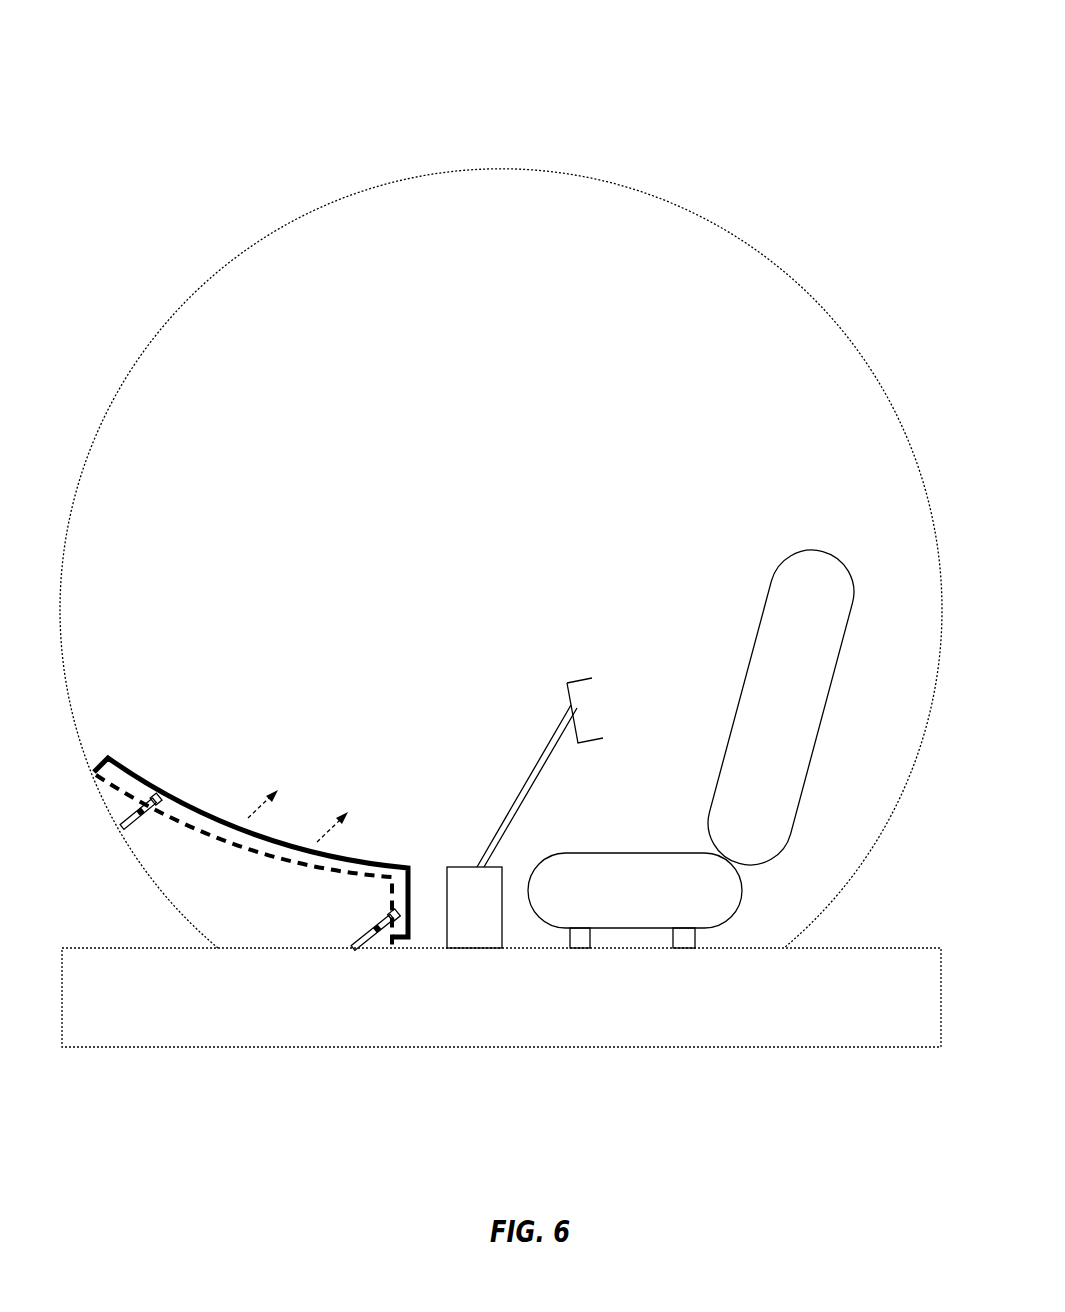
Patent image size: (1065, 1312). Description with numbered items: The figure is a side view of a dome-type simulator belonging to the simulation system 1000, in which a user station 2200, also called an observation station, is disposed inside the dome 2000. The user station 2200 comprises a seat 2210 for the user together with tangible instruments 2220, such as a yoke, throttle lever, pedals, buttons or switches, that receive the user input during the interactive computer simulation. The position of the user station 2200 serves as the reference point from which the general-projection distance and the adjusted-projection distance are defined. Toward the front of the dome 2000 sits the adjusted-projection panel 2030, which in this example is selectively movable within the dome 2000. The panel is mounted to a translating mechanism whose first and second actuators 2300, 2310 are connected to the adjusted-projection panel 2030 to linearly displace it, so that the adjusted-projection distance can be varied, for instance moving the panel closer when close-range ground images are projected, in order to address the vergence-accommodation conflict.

The simulation system 1000 is at (838, 91).
The dome 2000 is at (638, 188).
The adjusted-projection panel 2030 is at (123, 780).
The user station 2200 is at (695, 709).
The seat 2210 is at (763, 727).
The tangible instruments 2220 is at (578, 678).
The first actuator 2300 is at (128, 830).
The second actuator 2310 is at (365, 947).